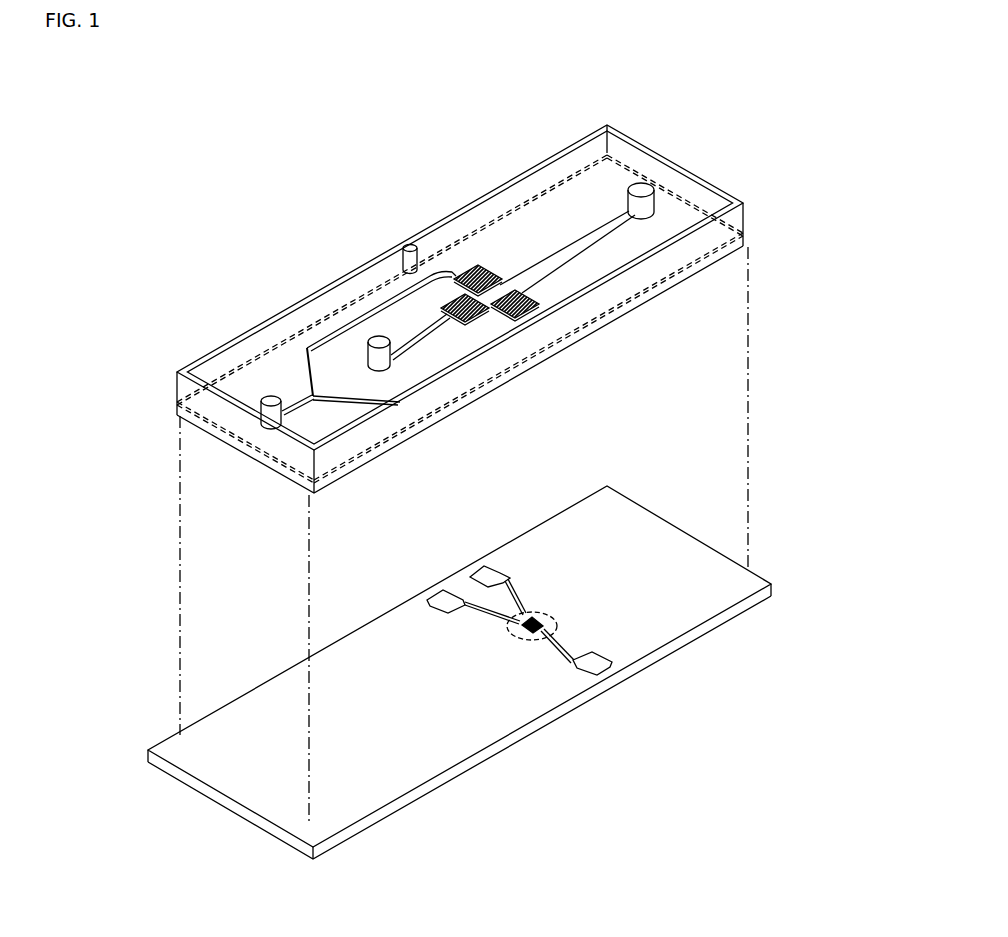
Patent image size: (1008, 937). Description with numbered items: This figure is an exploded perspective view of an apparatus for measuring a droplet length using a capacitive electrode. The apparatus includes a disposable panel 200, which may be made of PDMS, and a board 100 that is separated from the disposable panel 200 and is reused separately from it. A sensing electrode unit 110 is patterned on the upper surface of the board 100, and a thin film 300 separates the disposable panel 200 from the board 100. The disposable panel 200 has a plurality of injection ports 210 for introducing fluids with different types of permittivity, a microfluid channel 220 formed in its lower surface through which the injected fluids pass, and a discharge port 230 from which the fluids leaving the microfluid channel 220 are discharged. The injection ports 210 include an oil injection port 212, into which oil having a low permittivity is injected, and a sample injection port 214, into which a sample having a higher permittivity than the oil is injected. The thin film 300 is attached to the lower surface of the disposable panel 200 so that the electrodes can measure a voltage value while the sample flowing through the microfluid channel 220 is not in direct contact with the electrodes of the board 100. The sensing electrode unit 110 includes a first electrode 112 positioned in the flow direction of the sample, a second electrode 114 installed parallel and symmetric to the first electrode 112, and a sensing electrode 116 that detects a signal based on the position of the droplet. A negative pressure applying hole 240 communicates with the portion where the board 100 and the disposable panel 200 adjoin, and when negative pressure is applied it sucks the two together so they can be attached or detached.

The board 100 is at (682, 623).
The sensing electrode unit 110 is at (530, 641).
The first electrode 112 is at (440, 598).
The second electrode 114 is at (481, 567).
The sensing electrode 116 is at (609, 664).
The disposable panel 200 is at (458, 277).
The injection ports 210 is at (281, 323).
The oil injection port 212 is at (266, 398).
The sample injection port 214 is at (344, 302).
The microfluid channel 220 is at (546, 274).
The discharge port 230 is at (646, 186).
The negative pressure applying hole 240 is at (409, 247).
The thin film 300 is at (673, 279).